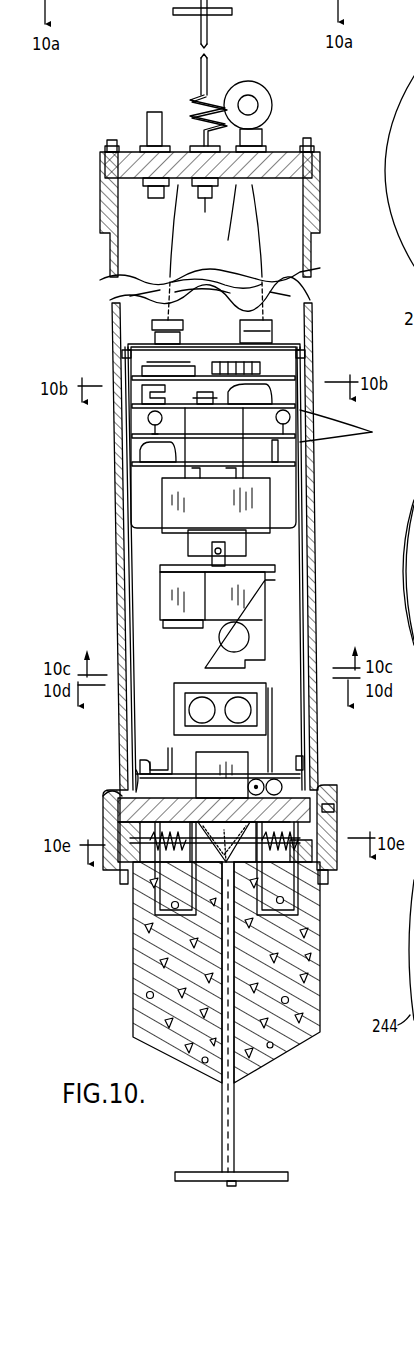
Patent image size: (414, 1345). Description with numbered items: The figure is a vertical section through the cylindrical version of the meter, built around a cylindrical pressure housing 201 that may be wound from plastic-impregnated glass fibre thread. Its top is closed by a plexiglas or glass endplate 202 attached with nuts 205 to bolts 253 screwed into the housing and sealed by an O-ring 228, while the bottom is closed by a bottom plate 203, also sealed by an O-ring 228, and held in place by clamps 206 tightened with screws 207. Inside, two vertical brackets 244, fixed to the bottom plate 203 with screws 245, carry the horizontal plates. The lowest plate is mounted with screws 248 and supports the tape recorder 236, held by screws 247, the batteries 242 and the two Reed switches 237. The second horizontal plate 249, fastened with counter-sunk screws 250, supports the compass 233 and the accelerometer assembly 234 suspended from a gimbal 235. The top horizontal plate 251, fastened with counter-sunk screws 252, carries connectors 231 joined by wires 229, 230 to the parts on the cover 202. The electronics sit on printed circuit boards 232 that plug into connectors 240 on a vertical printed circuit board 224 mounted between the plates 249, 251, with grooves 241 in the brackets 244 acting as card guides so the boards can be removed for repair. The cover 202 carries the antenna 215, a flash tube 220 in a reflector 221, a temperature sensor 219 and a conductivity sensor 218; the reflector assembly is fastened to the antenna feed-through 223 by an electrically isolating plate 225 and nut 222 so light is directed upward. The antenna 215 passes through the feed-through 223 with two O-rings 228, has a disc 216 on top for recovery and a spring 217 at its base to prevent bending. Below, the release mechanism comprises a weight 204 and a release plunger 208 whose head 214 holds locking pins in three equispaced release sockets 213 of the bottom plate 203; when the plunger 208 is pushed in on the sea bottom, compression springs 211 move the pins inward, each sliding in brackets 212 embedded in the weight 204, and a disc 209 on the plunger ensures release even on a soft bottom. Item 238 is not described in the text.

The cylindrical pressure housing 201 is at (311, 250).
The endplate 202 is at (272, 150).
The bottom plate 203 is at (106, 810).
The weight 204 is at (280, 1070).
The nuts 205 is at (312, 150).
The clamps 206 is at (330, 800).
The screws 207 is at (319, 900).
The release plunger 208 is at (222, 1118).
The disc 209 is at (260, 1172).
The compression springs 211 is at (160, 846).
The brackets 212 is at (145, 900).
The release sockets 213 is at (326, 868).
The head of release plunger 214 is at (250, 755).
The antenna 215 is at (200, 30).
The disc 216 is at (232, 12).
The spring 217 is at (200, 92).
The conductivity sensor 218 is at (266, 90).
The temperature sensor 219 is at (148, 118).
The flash tube 220 is at (225, 284).
The reflector 221 is at (258, 205).
The nut 222 is at (175, 222).
The feed-through 223 is at (206, 212).
The vertical printed circuit board 224 is at (300, 448).
The electrically isolating plate 225 is at (230, 225).
The O-ring 228 is at (192, 152).
The wires 229 is at (150, 296).
The wires 230 is at (285, 296).
The connectors 231 is at (240, 328).
The printed circuit boards 232 is at (349, 426).
The compass 233 is at (275, 500).
The accelerometer assembly 234 is at (270, 640).
The gimbal 235 is at (242, 550).
The tape recorder 236 is at (266, 690).
The Reed switches 237 is at (282, 783).
The bracket 238 is at (198, 752).
The connectors 240 is at (160, 420).
The grooves 241 is at (145, 478).
The batteries 242 is at (290, 718).
The vertical brackets 244 is at (133, 668).
The screws 245 is at (105, 795).
The screws 247 is at (300, 758).
The screws 248 is at (140, 765).
The horizontal plate 249 is at (162, 530).
The counter-sunk screws 250 is at (127, 520).
The top horizontal plate 251 is at (302, 348).
The counter-sunk screws 252 is at (300, 355).
The bolts 253 is at (309, 138).